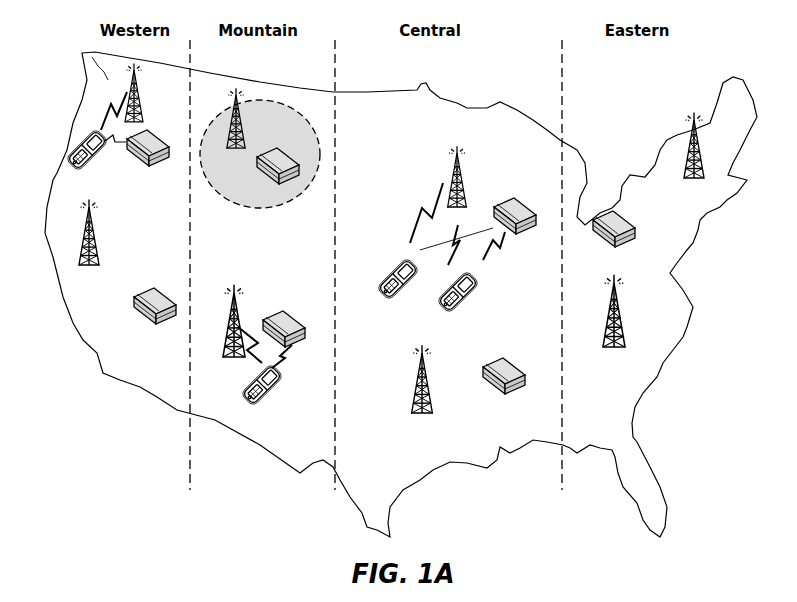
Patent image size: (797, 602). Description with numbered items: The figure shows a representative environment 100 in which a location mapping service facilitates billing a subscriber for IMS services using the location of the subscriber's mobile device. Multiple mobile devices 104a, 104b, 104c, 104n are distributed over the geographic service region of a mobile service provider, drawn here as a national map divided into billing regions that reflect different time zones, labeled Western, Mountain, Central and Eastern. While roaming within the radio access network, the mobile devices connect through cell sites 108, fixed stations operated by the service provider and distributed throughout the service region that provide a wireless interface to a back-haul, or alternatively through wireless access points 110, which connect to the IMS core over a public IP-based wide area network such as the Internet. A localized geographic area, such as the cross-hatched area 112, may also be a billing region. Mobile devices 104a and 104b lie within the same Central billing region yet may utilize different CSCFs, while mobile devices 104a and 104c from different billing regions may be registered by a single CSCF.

The environment 100 is at (140, 434).
The mobile device 104a is at (426, 242).
The mobile device 104b is at (479, 269).
The mobile device 104c is at (72, 132).
The mobile device 104n is at (283, 367).
The cell site 108 is at (409, 238).
The wireless access point 110 is at (397, 253).
The cross-hatched area 112 is at (260, 169).